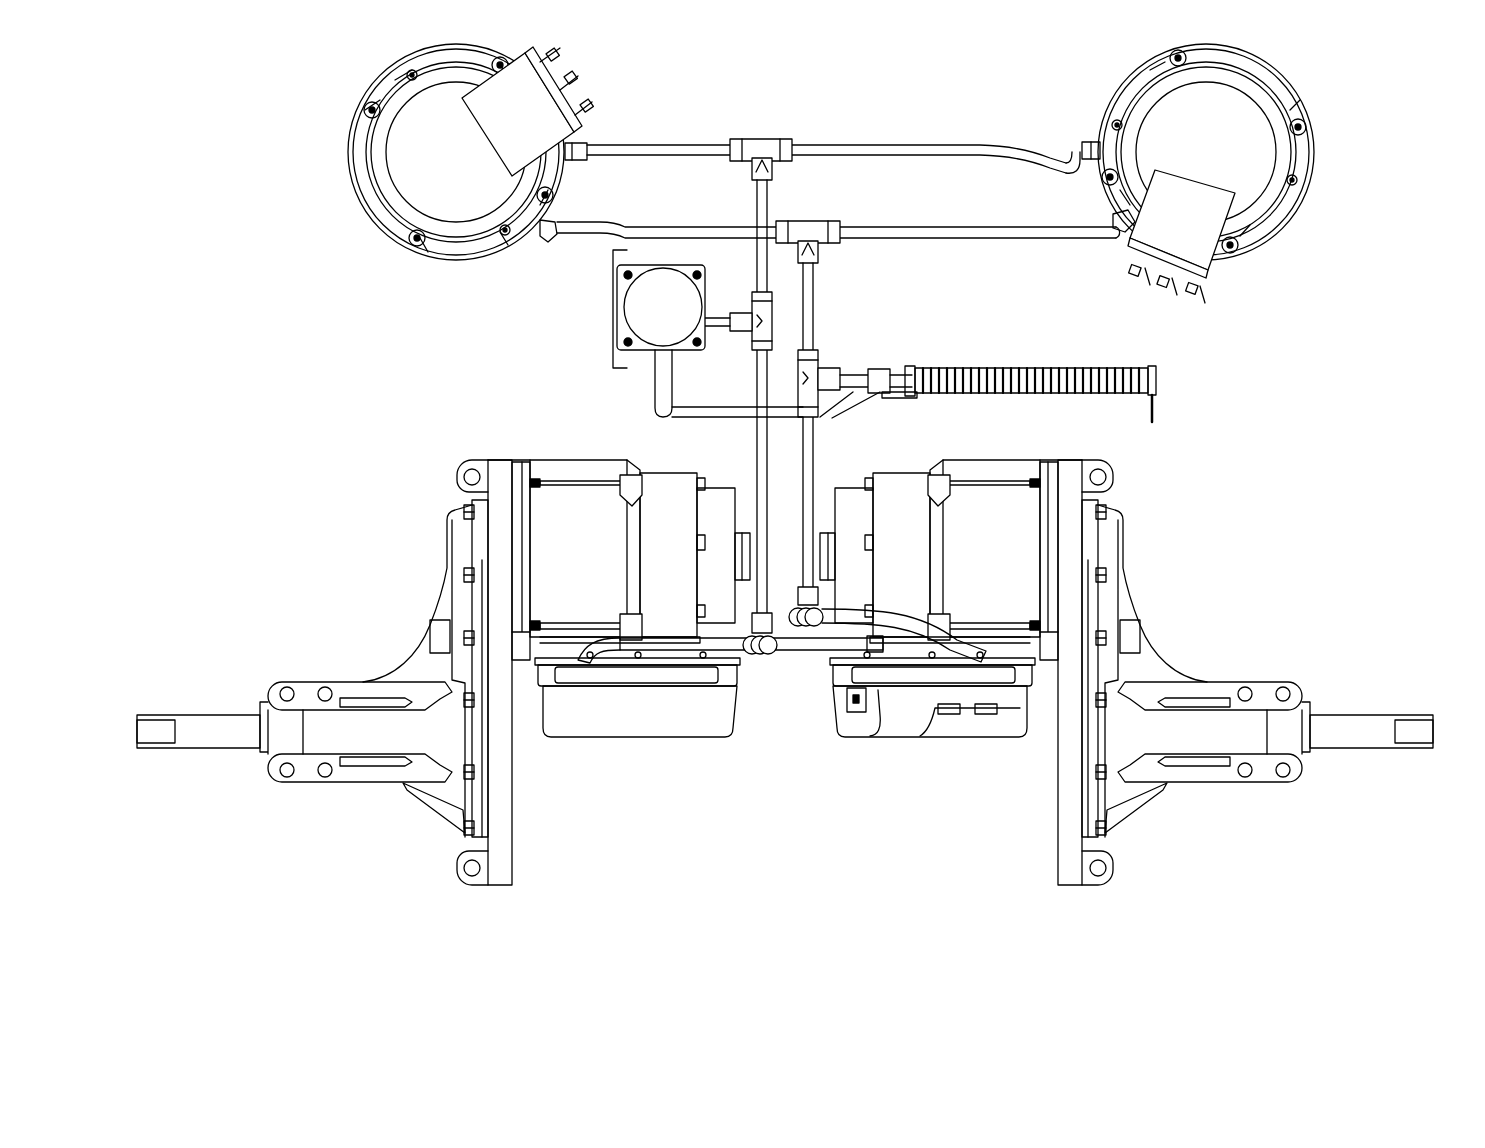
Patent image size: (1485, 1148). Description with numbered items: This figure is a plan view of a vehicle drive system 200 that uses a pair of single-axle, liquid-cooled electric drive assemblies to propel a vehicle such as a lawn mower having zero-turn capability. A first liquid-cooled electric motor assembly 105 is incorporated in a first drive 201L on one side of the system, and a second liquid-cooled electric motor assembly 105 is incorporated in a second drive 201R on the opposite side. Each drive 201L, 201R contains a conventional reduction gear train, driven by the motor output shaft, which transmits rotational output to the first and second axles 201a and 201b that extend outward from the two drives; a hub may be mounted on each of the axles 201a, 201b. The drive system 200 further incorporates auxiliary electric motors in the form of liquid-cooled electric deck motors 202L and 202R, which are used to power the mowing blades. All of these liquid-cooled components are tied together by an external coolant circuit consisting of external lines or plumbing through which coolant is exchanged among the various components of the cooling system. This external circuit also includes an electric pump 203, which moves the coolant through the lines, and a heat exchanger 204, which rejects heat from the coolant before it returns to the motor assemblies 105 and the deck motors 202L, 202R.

The vehicle drive system 200 is at (222, 179).
The first drive 201L is at (390, 621).
The second drive 201R is at (1180, 619).
The first axle 201a is at (217, 742).
The second axle 201b is at (1351, 744).
The liquid-cooled electric deck motor 202L is at (414, 268).
The liquid-cooled electric deck motor 202R is at (1252, 270).
The electric pump 203 is at (590, 316).
The heat exchanger 204 is at (1022, 352).
The liquid-cooled electric motor assembly 105 is at (620, 765).